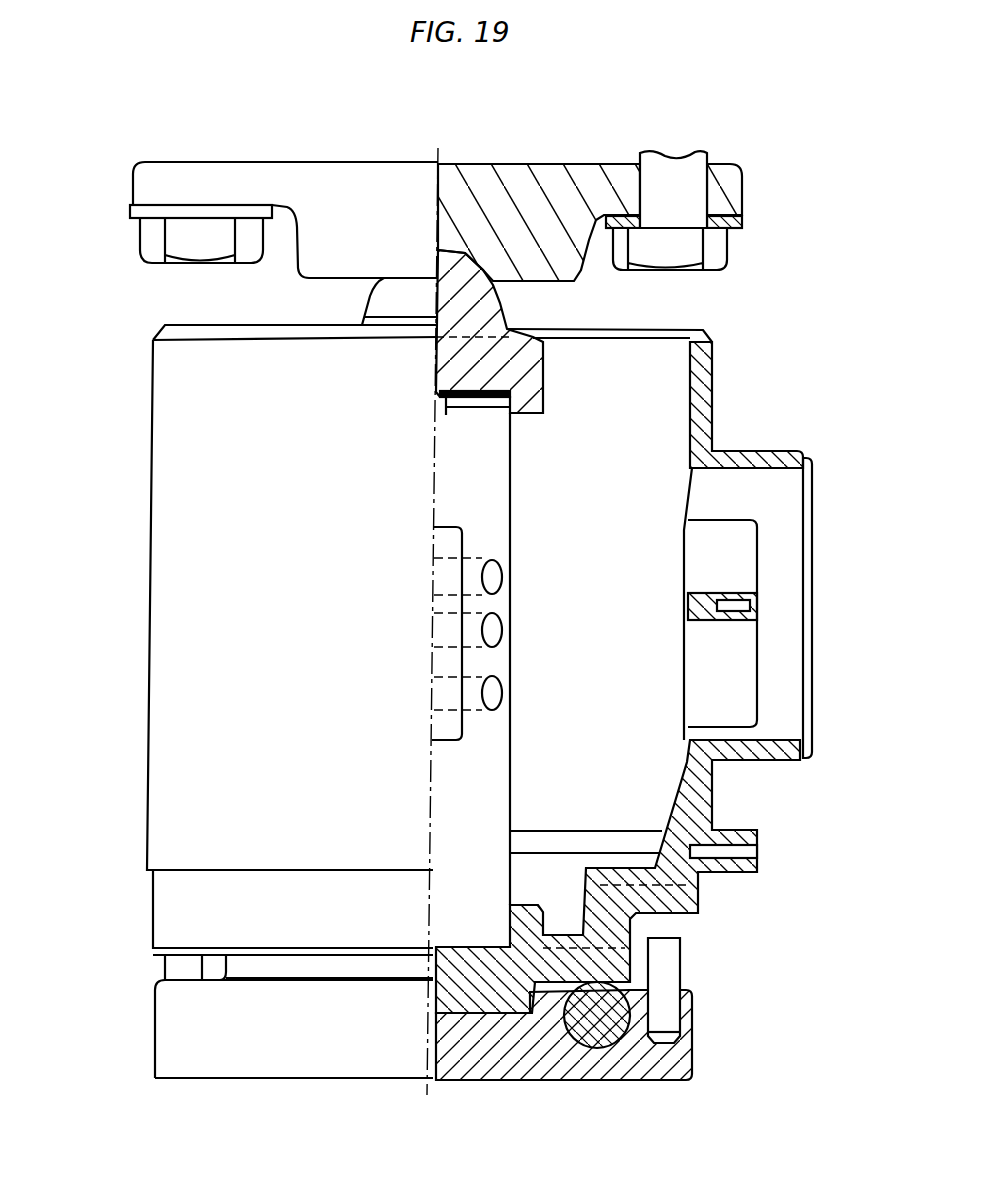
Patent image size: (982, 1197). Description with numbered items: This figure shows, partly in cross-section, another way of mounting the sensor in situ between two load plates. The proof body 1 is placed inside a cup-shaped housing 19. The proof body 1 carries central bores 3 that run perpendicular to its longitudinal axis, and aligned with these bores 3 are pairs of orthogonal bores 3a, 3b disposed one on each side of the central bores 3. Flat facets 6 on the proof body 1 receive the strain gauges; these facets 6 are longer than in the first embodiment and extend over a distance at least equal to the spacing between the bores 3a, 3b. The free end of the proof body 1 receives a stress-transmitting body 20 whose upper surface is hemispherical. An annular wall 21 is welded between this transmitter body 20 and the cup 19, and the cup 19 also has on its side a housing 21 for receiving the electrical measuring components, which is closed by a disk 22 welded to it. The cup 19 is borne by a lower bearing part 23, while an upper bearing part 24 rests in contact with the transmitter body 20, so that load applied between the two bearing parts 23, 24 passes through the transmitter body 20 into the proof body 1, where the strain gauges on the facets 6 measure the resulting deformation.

The proof body 1 is at (485, 775).
The bore 3 is at (490, 627).
The orthogonal bore 3a is at (497, 575).
The orthogonal bore 3b is at (492, 690).
The flat facet 6 is at (443, 663).
The housing 19 is at (193, 544).
The stress-transmitting body 20 is at (487, 310).
The annular wall 21 is at (779, 457).
The disk 22 is at (808, 588).
The bearing part 23 is at (455, 1060).
The bearing part 24 is at (465, 182).